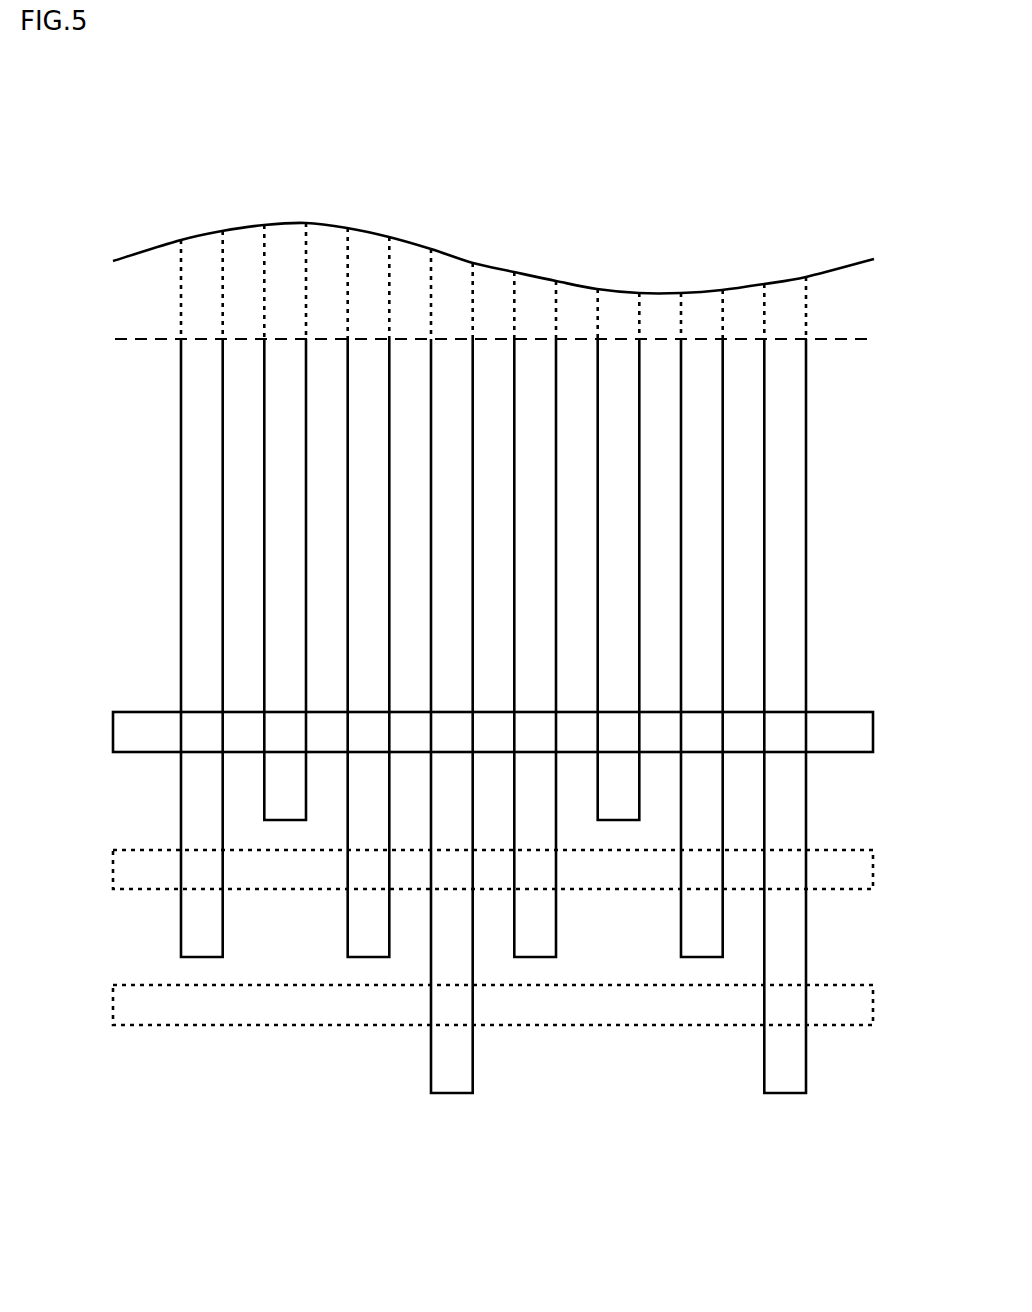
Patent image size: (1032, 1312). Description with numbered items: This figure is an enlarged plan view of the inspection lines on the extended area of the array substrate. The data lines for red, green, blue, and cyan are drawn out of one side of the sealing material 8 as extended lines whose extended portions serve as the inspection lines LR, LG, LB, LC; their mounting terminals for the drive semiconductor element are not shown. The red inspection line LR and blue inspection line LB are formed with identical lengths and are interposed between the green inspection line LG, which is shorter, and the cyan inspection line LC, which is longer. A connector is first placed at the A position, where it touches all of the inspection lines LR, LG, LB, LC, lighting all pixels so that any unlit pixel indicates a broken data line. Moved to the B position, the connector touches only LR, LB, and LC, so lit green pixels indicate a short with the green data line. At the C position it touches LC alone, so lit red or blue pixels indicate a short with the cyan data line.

The sealing material 8 is at (853, 339).
The red inspection line LR is at (537, 275).
The green inspection line LG is at (617, 290).
The blue inspection line LB is at (703, 290).
The cyan inspection line LC is at (782, 280).
The A position A is at (515, 733).
The B position B is at (515, 872).
The C position C is at (515, 1007).